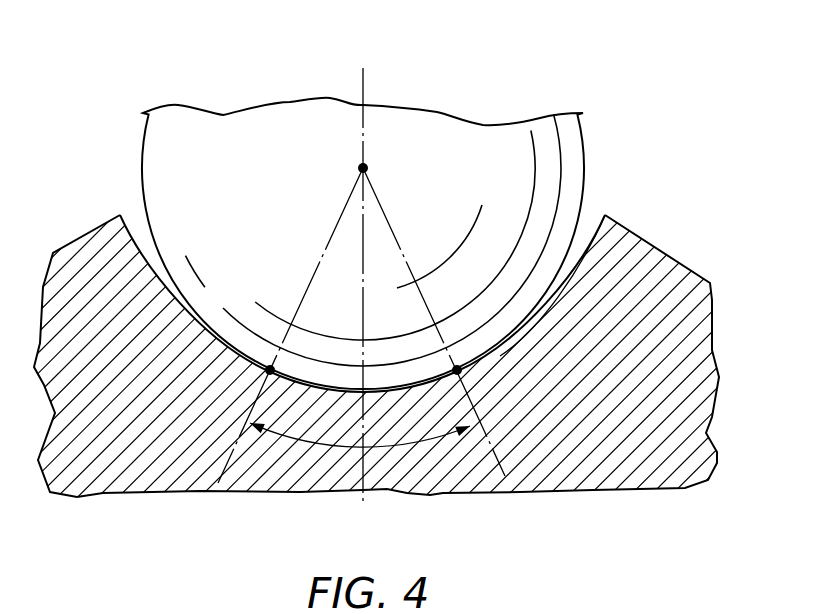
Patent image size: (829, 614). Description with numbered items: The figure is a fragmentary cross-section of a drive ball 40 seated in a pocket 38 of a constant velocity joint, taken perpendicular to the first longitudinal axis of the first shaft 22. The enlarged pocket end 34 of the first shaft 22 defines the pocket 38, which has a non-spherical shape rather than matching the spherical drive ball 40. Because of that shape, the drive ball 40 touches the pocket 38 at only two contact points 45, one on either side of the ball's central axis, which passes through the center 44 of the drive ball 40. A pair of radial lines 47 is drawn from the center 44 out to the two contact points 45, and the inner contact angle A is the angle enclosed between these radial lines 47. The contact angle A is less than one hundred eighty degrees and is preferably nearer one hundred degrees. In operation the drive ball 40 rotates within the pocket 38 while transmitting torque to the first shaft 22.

The first shaft 22 is at (84, 219).
The pocket end 34 is at (640, 234).
The pocket 38 is at (565, 283).
The drive ball 40 is at (388, 137).
The center 44 is at (366, 167).
The contact point 45 is at (270, 365).
The radial line 47 is at (335, 224).
The inner contact angle A is at (397, 447).